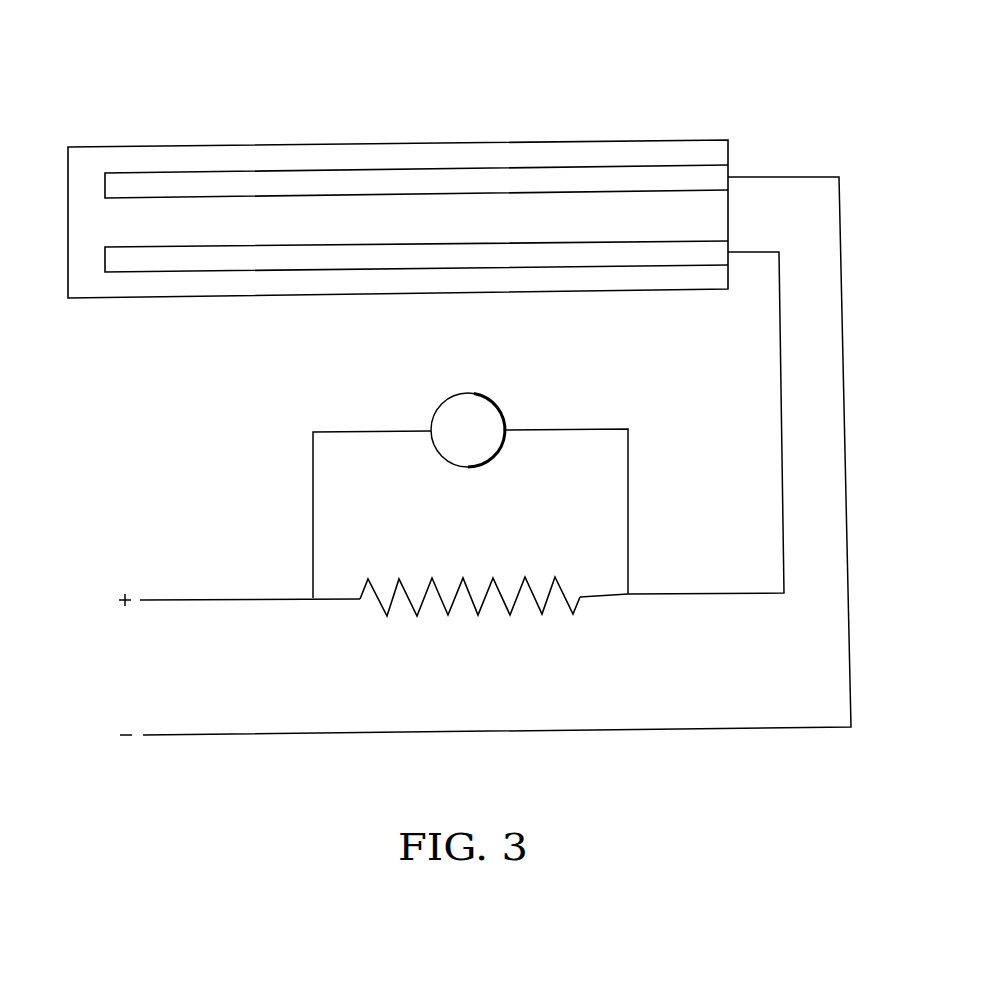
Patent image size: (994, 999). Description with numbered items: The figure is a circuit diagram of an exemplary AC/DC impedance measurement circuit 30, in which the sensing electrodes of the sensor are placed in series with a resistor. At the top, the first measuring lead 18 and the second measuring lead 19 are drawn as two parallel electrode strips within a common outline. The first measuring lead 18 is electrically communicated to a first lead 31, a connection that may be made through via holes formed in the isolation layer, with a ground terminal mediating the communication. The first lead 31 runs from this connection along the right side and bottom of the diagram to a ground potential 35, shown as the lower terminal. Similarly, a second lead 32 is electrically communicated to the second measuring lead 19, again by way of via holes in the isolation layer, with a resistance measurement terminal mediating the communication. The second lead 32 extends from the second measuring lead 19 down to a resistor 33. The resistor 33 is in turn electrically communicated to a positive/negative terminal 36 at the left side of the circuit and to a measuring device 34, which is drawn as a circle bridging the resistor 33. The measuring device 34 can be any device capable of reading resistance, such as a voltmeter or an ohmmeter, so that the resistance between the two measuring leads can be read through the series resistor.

The first measuring lead 18 is at (643, 180).
The second measuring lead 19 is at (647, 252).
The AC/DC impedance measurement circuit 30 is at (633, 60).
The first lead 31 is at (839, 217).
The second lead 32 is at (781, 410).
The resistor 33 is at (443, 604).
The measuring device 34 is at (449, 402).
The ground potential 35 is at (121, 731).
The positive/negative terminal 36 is at (121, 592).